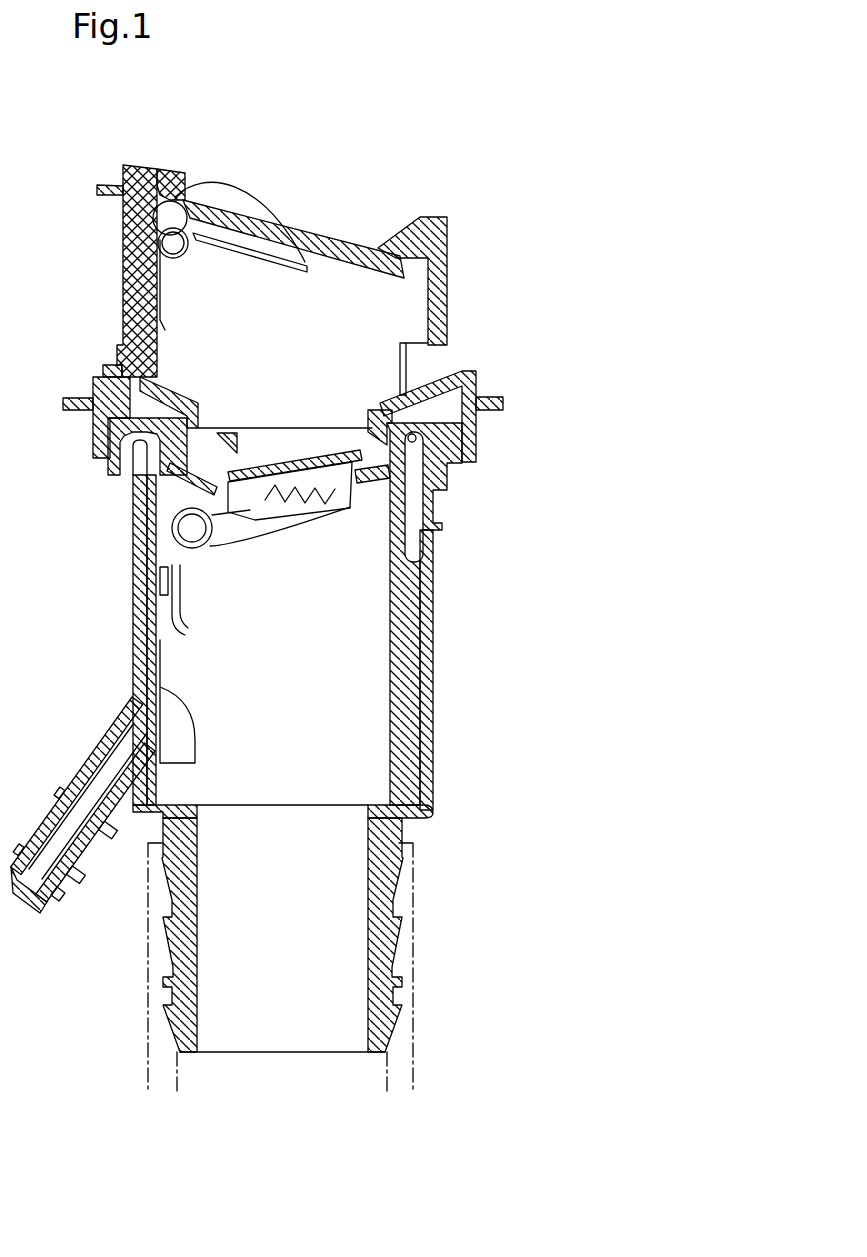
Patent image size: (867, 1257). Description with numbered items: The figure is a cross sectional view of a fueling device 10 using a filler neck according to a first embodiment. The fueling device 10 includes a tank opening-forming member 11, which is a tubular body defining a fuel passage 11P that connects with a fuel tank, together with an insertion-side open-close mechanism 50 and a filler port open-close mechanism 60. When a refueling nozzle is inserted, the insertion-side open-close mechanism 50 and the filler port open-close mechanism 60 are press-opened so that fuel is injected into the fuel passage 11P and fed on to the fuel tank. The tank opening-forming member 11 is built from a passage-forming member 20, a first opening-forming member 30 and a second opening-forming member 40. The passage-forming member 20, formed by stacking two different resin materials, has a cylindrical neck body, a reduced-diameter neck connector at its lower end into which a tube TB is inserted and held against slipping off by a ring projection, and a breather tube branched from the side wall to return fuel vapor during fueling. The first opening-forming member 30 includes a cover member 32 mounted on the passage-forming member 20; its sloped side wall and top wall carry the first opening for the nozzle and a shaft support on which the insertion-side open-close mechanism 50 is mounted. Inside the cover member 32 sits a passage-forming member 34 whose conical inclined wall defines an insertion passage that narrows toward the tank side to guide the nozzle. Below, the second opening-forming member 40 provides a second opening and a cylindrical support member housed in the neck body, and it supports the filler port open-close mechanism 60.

The fueling device 10 is at (510, 192).
The tank opening-forming member 11 is at (697, 343).
The fuel passage 11P is at (312, 684).
The passage-forming member 20 is at (432, 733).
The first opening-forming member 30 is at (620, 297).
The cover member 32 is at (448, 313).
The passage-forming member 34 is at (500, 403).
The second opening-forming member 40 is at (455, 488).
The insertion-side open-close mechanism 50 is at (123, 168).
The filler port open-close mechanism 60 is at (212, 548).
The tube TB is at (413, 953).